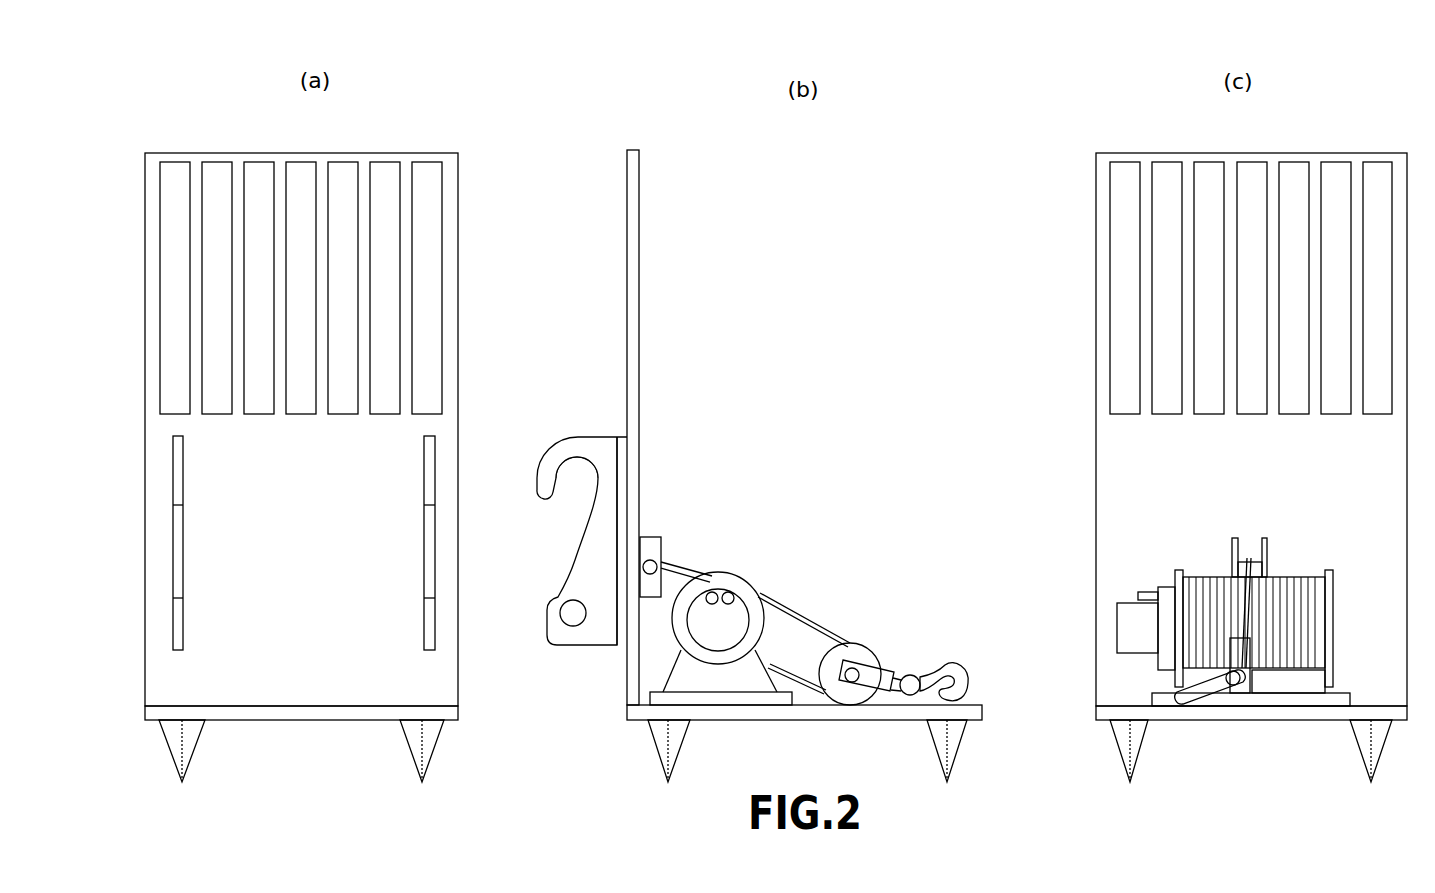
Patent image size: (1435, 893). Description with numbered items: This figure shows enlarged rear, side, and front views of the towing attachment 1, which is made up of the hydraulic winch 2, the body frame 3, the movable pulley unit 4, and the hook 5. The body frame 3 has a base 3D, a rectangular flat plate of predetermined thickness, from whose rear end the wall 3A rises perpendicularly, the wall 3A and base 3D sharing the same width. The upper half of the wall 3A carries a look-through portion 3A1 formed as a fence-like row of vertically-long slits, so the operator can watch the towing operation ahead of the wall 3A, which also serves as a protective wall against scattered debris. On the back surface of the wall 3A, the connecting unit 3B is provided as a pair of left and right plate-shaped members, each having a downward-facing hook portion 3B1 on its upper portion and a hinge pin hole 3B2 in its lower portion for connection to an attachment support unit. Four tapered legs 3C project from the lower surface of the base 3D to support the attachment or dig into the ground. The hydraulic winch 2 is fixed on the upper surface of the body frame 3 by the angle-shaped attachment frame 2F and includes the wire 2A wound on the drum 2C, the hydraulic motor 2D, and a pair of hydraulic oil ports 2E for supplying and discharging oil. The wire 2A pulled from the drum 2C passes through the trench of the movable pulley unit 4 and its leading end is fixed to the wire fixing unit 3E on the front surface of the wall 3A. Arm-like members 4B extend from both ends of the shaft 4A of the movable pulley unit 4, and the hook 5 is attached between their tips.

The towing attachment 1 is at (235, 127).
The hydraulic winch 2 is at (751, 563).
The wire 2A is at (803, 607).
The drum 2C is at (692, 593).
The hydraulic motor 2D is at (742, 620).
The hydraulic oil ports 2E is at (728, 592).
The attachment frame 2F is at (683, 700).
The body frame 3 is at (394, 143).
The wall 3A is at (292, 502).
The look-through portion 3A1 is at (347, 247).
The connecting unit 3B is at (175, 543).
The hook portion 3B1 is at (570, 455).
The hinge pin hole 3B2 is at (578, 627).
The legs 3C is at (190, 735).
The base 3D is at (973, 712).
The wire fixing unit 3E is at (652, 560).
The movable pulley unit 4 is at (843, 655).
The shaft 4A is at (865, 675).
The arm-like members 4B is at (882, 678).
The hook 5 is at (953, 663).